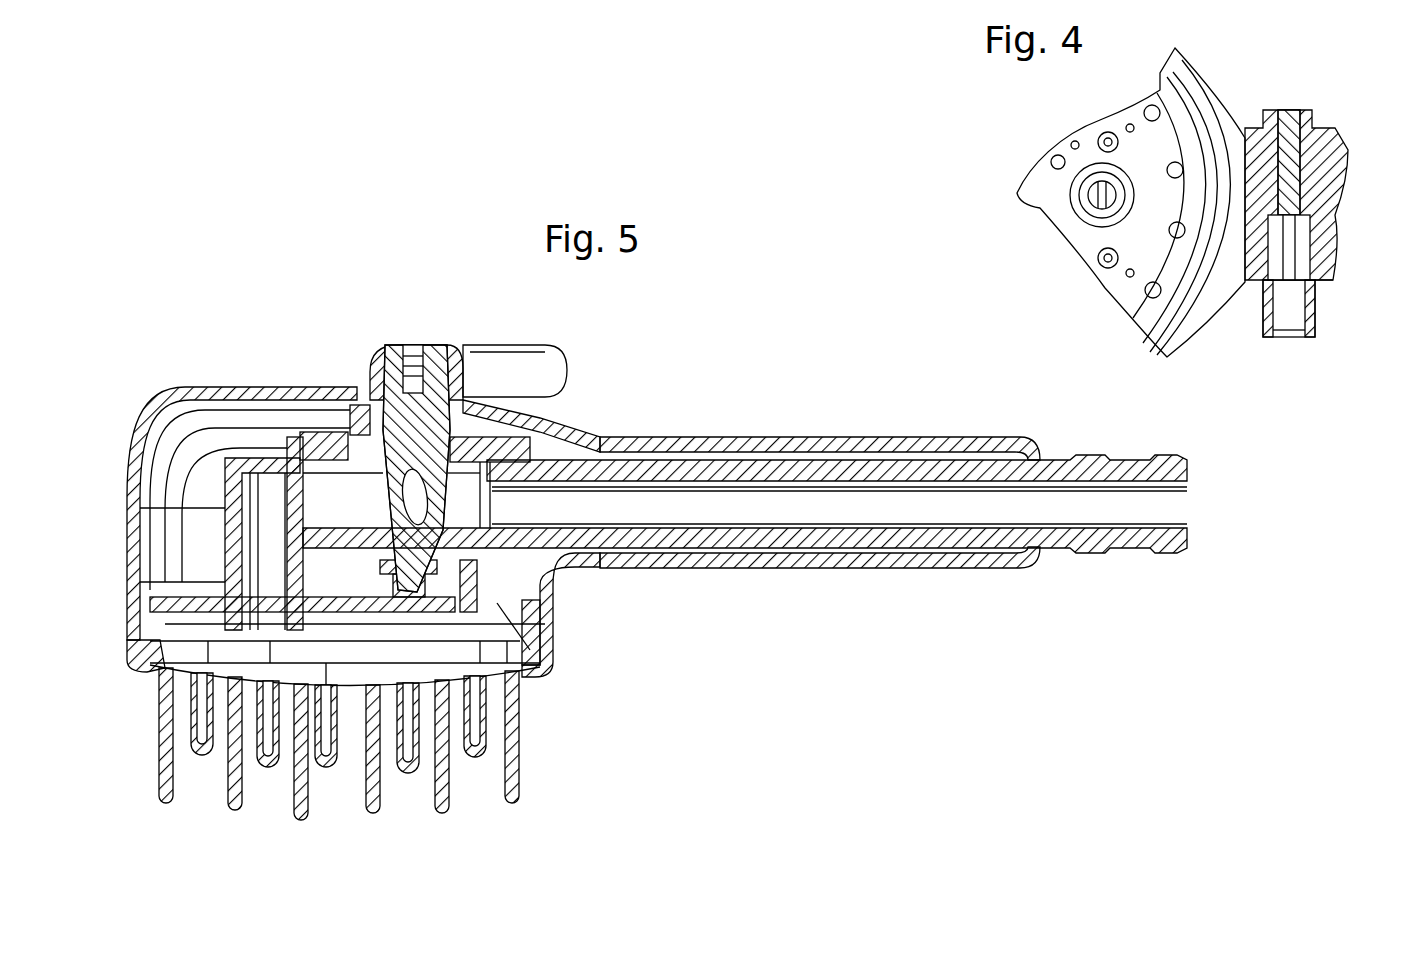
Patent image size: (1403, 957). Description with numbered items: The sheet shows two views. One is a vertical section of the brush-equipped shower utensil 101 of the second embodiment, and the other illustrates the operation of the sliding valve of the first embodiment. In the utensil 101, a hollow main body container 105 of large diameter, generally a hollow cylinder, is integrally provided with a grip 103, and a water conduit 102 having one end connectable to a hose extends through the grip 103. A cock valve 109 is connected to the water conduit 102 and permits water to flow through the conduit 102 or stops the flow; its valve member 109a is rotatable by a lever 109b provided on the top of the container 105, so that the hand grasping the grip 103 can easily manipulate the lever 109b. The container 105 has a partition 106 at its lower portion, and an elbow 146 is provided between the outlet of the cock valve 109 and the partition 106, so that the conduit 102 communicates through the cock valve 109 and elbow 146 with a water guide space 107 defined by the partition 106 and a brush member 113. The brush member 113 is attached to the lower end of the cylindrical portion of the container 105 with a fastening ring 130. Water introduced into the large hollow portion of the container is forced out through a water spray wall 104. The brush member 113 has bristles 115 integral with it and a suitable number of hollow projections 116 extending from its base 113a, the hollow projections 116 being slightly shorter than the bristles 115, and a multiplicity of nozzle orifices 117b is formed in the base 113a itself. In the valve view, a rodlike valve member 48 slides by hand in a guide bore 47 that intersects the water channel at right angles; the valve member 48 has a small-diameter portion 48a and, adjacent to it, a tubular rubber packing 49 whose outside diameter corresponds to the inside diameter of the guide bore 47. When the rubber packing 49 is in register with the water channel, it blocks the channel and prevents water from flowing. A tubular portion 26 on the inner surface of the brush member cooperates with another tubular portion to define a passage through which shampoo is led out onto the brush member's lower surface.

In FIG. 4, the tubular portion 26 is at (1330, 207).
In FIG. 4, the guide bore 47 is at (1265, 275).
In FIG. 4, the valve member 48 is at (1285, 338).
In FIG. 4, the small-diameter portion 48a is at (1330, 282).
In FIG. 4, the rubber packing 49 is at (1347, 163).
In FIG. 5, the brush-equipped shower utensil 101 is at (181, 392).
In FIG. 5, the water conduit 102 is at (983, 460).
In FIG. 5, the grip 103 is at (930, 438).
In FIG. 5, the water spray wall 104 is at (160, 725).
In FIG. 5, the main body container 105 is at (247, 385).
In FIG. 5, the partition 106 is at (197, 617).
In FIG. 5, the water guide space 107 is at (376, 645).
In FIG. 5, the cock valve 109 is at (375, 362).
In FIG. 5, the valve member 109a is at (527, 420).
In FIG. 5, the lever 109b is at (490, 343).
In FIG. 5, the brush member 113 is at (527, 690).
In FIG. 5, the base 113a is at (342, 690).
In FIG. 5, the bristles 115 is at (160, 800).
In FIG. 5, the hollow projections 116 is at (267, 763).
In FIG. 5, the nozzle orifices 117b is at (330, 690).
In FIG. 5, the fastening ring 130 is at (553, 647).
In FIG. 5, the elbow 146 is at (205, 492).